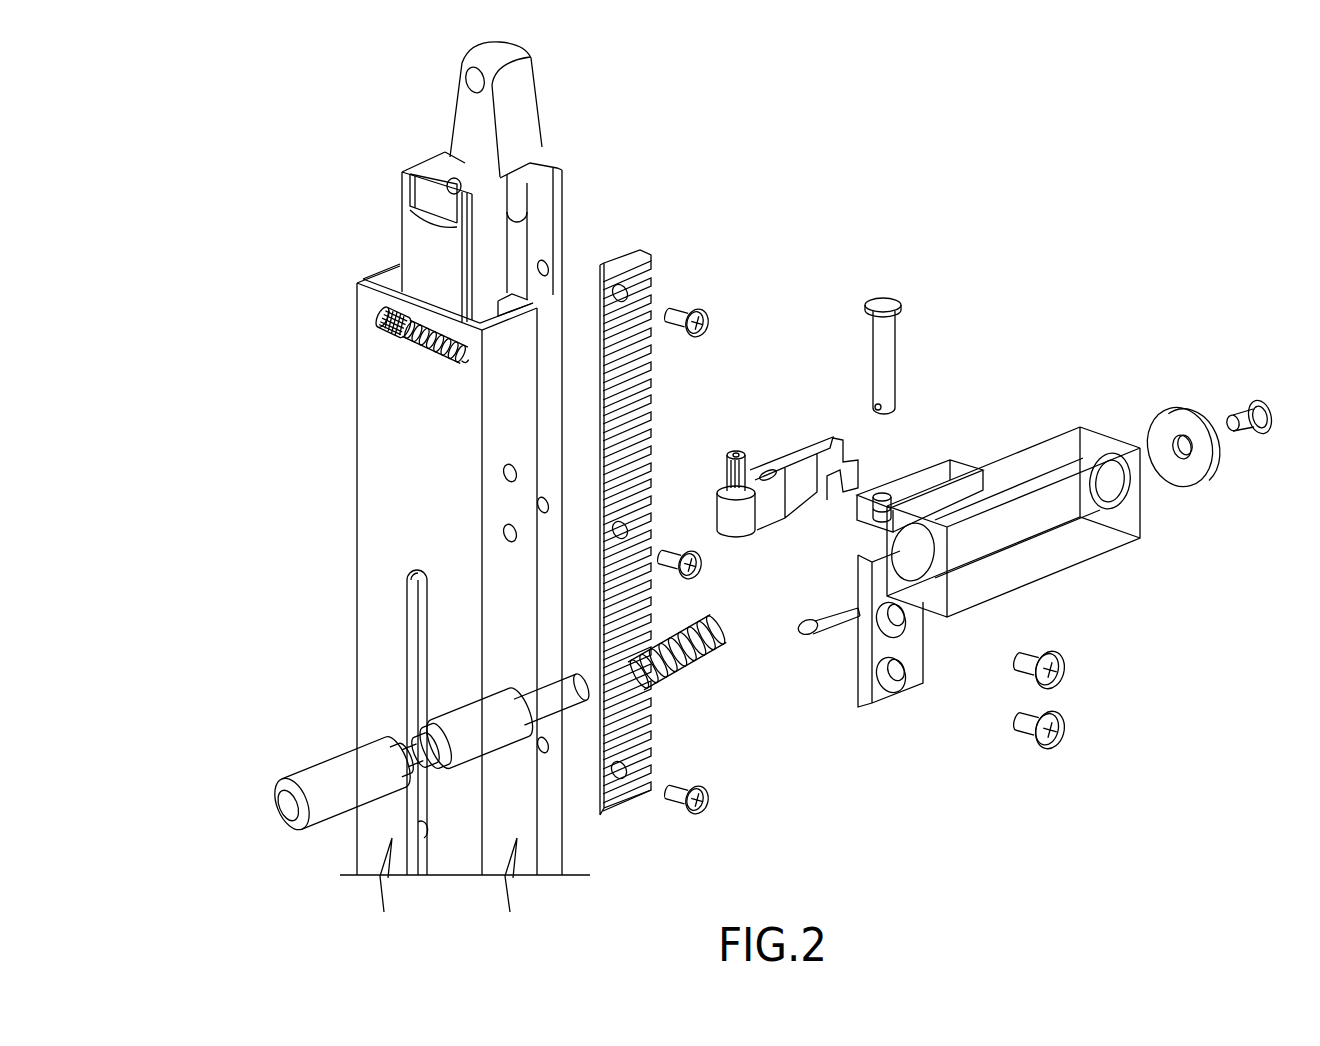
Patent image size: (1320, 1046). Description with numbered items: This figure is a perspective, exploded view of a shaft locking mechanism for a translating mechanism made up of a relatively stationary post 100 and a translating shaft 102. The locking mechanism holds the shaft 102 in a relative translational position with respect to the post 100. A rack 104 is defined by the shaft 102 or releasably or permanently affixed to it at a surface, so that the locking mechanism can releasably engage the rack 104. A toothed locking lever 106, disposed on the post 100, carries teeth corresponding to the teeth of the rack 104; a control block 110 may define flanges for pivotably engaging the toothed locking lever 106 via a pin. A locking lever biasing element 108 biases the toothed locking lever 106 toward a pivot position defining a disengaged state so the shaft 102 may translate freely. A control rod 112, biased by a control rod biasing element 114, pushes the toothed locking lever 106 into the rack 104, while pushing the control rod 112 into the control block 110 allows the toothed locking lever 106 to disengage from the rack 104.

The post 100 is at (370, 518).
The translating shaft 102 is at (528, 102).
The rack 104 is at (645, 262).
The toothed locking lever 106 is at (790, 460).
The locking lever biasing element 108 is at (420, 352).
The control block 110 is at (1048, 454).
The control rod 112 is at (283, 812).
The control rod biasing element 114 is at (682, 670).